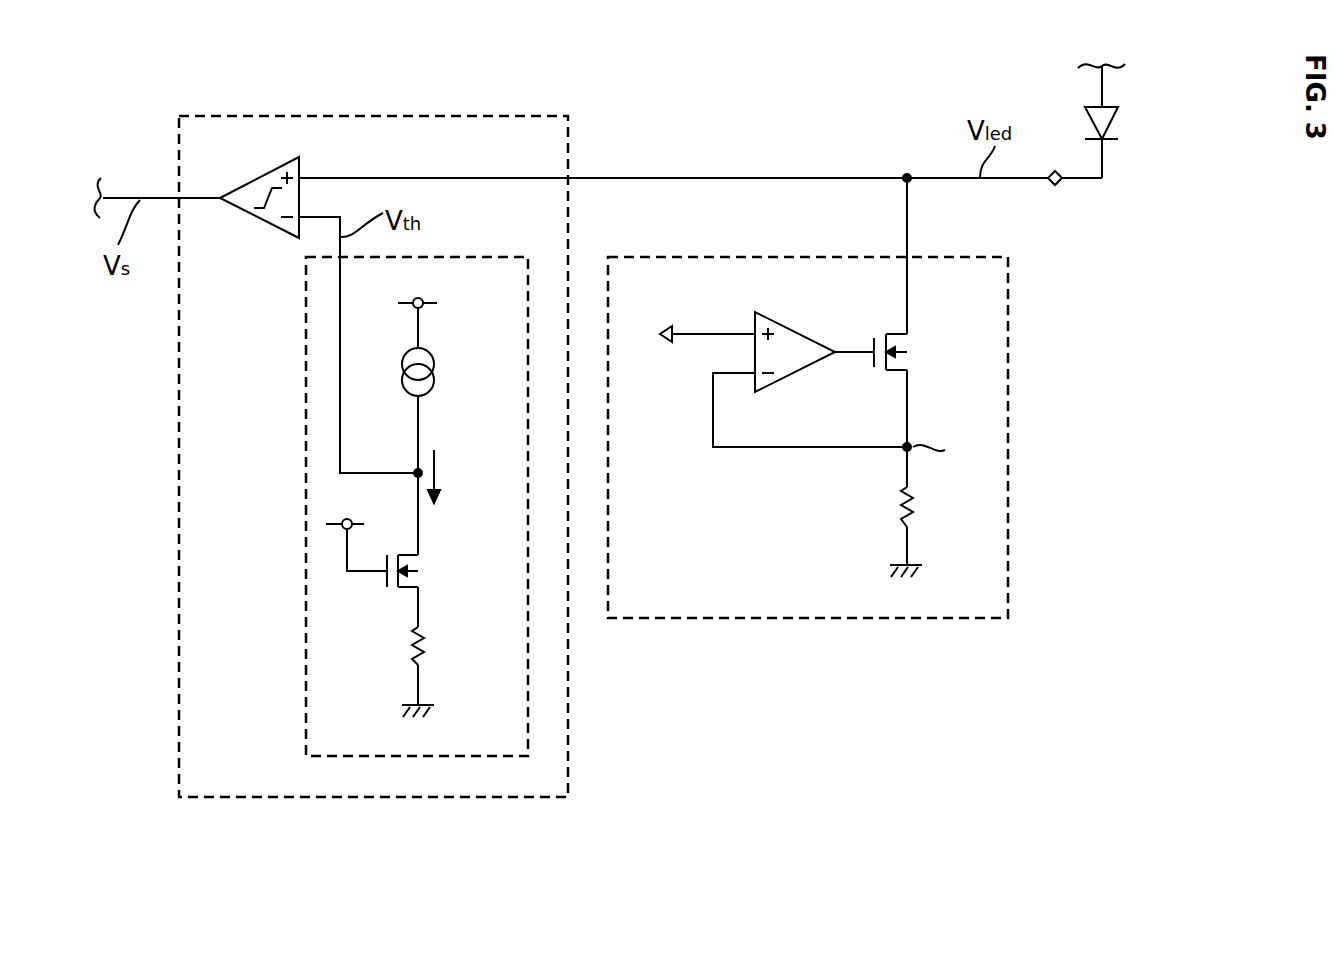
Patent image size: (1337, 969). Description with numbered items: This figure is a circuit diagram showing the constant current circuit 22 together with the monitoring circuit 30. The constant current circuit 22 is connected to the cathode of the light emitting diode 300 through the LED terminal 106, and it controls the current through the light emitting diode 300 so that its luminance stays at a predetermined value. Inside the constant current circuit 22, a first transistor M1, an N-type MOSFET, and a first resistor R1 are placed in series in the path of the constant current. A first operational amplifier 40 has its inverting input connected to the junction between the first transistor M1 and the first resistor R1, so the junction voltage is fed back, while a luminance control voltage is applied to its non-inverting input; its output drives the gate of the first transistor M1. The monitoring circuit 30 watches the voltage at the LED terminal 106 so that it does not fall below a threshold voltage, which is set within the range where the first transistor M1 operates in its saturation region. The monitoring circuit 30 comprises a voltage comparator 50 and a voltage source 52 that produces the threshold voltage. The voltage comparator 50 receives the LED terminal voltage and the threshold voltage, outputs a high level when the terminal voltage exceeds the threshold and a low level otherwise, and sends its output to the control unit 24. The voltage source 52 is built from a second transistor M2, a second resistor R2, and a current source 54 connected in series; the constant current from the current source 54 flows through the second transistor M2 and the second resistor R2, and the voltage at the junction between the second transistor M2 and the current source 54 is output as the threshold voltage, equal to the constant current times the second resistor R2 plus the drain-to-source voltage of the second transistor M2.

The constant current circuit 22 is at (808, 619).
The control unit 24 is at (141, 198).
The monitoring circuit 30 is at (372, 798).
The first operational amplifier 40 is at (796, 326).
The voltage comparator 50 is at (262, 220).
The voltage source 52 is at (305, 503).
The current source 54 is at (438, 372).
The LED terminal 106 is at (1055, 186).
The light emitting diode 300 is at (1120, 123).
The first transistor M1 is at (912, 352).
The second transistor M2 is at (395, 556).
The first resistor R1 is at (928, 507).
The second resistor R2 is at (438, 649).